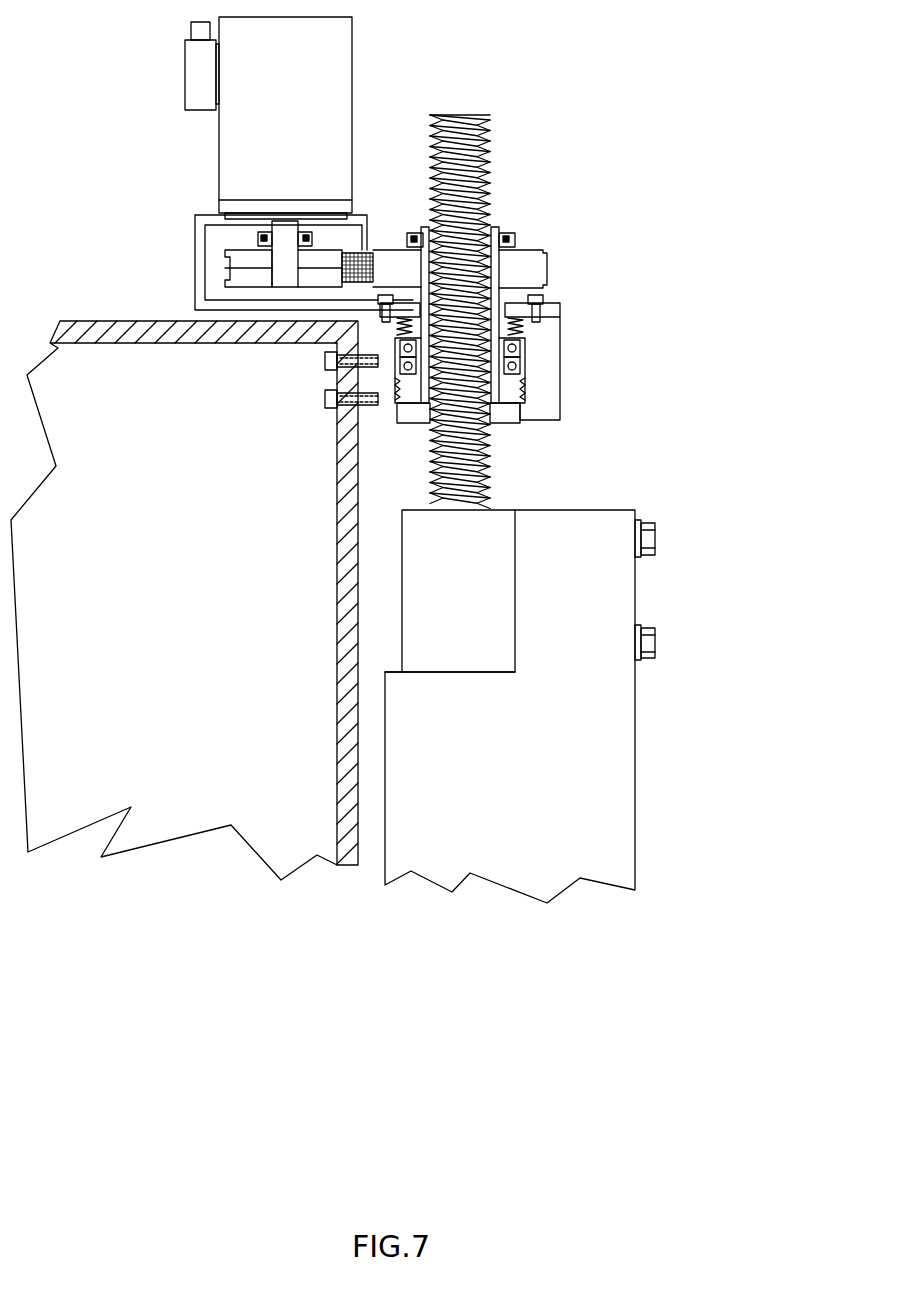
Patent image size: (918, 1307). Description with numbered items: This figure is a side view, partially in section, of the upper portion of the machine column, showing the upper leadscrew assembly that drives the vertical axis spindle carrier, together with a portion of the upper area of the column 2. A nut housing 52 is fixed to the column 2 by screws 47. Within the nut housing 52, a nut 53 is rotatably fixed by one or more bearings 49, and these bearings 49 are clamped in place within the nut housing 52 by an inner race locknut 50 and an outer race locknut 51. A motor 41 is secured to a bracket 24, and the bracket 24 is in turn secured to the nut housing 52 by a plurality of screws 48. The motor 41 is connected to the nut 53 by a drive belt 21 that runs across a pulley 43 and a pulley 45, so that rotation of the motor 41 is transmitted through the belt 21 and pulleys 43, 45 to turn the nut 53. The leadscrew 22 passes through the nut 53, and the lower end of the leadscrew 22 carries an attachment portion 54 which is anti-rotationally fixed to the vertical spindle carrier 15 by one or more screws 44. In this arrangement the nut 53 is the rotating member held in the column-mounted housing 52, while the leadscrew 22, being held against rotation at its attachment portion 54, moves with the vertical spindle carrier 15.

The column 2 is at (82, 320).
The vertical spindle carrier 15 is at (520, 898).
The drive belt 21 is at (358, 255).
The leadscrew 22 is at (490, 160).
The bracket 24 is at (195, 230).
The motor 41 is at (183, 66).
The pulley 43 is at (222, 270).
The screws 44 is at (657, 643).
The pulley 45 is at (548, 272).
The screws 47 is at (325, 398).
The screws 48 is at (548, 300).
The bearings 49 is at (512, 365).
The inner race locknut 50 is at (512, 325).
The outer race locknut 51 is at (512, 390).
The nut housing 52 is at (562, 425).
The nut 53 is at (510, 432).
The attachment portion 54 is at (470, 625).